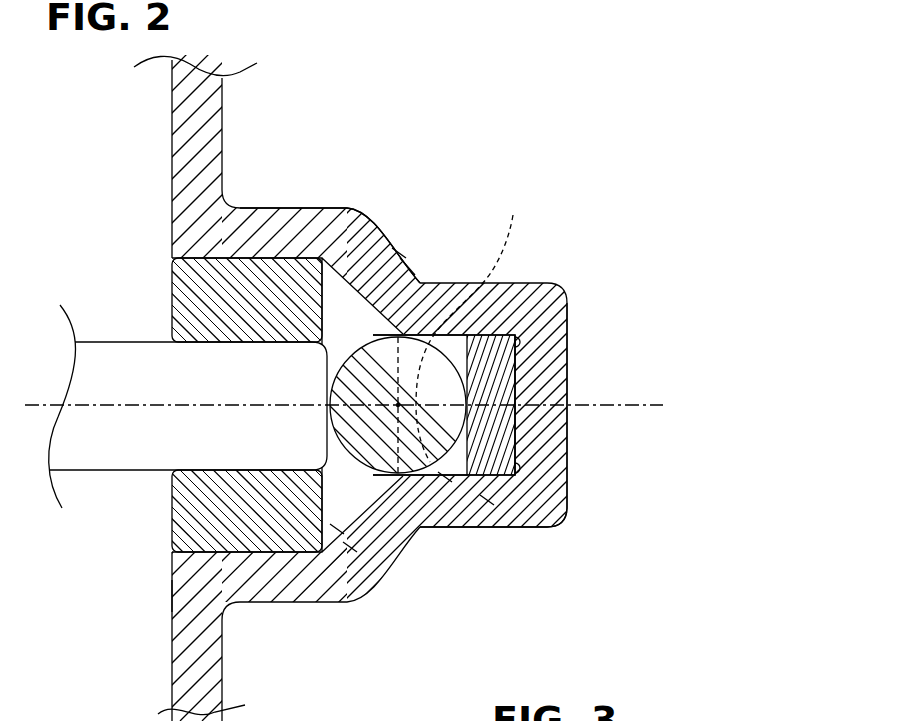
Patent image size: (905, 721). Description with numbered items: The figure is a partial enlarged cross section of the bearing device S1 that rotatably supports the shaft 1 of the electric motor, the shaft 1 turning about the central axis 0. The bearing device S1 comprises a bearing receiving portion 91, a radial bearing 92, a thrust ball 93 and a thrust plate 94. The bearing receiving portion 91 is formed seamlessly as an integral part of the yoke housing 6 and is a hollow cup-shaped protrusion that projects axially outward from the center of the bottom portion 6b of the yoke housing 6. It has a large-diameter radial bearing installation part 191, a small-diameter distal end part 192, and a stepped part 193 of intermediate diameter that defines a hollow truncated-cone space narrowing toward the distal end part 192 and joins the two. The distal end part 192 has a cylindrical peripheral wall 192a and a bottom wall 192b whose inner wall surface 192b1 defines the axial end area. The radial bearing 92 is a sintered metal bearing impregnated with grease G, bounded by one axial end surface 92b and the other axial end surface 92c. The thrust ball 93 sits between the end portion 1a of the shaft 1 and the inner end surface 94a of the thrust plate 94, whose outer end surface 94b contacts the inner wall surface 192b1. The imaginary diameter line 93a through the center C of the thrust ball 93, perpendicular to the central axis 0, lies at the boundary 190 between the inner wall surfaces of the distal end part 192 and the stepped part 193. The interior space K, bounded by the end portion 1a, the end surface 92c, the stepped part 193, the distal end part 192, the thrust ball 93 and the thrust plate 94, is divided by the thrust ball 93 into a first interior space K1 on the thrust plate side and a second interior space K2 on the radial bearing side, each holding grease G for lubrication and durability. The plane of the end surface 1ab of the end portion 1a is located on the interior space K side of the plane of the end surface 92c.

The shaft 1 is at (110, 352).
The end portion 1a is at (295, 462).
The end surface 1ab is at (412, 278).
The yoke housing 6 is at (243, 134).
The bottom portion 6b is at (172, 595).
The bearing receiving portion 91 is at (597, 134).
The radial bearing 92 is at (275, 554).
The one axial end surface 92b is at (167, 283).
The other axial end surface 92c is at (352, 212).
The thrust ball 93 is at (418, 473).
The imaginary line 93a is at (478, 324).
The thrust plate 94 is at (497, 390).
The inner end surface 94a is at (522, 340).
The outer end surface 94b is at (517, 358).
The boundary 190 is at (372, 498).
The radial bearing installation part 191 is at (330, 199).
The distal end part 192 is at (538, 263).
The cylindrical peripheral wall 192a is at (505, 527).
The bottom wall 192b is at (540, 433).
The inner wall surface 192b1 is at (560, 508).
The stepped part 193 is at (425, 236).
The central axis 0 is at (640, 405).
The center C is at (400, 412).
The grease G is at (337, 531).
The interior space K is at (400, 251).
The first interior space K1 is at (487, 505).
The second interior space K2 is at (350, 549).
The bearing device S1 is at (394, 49).